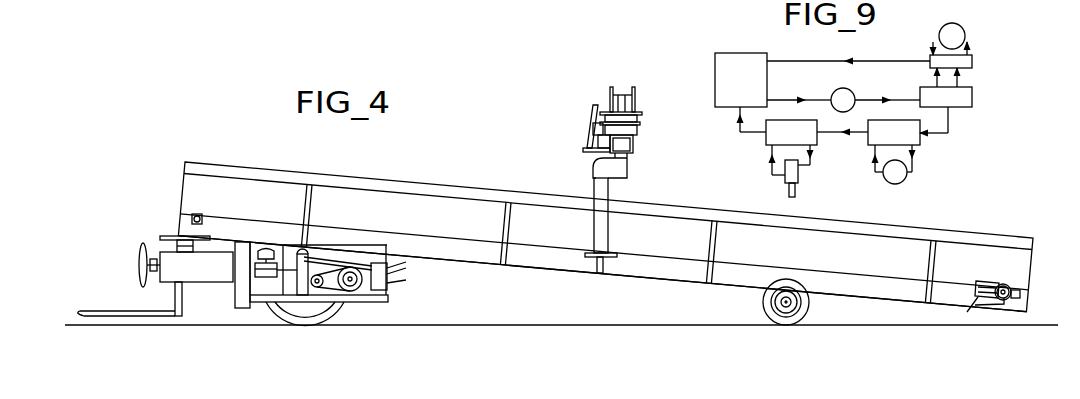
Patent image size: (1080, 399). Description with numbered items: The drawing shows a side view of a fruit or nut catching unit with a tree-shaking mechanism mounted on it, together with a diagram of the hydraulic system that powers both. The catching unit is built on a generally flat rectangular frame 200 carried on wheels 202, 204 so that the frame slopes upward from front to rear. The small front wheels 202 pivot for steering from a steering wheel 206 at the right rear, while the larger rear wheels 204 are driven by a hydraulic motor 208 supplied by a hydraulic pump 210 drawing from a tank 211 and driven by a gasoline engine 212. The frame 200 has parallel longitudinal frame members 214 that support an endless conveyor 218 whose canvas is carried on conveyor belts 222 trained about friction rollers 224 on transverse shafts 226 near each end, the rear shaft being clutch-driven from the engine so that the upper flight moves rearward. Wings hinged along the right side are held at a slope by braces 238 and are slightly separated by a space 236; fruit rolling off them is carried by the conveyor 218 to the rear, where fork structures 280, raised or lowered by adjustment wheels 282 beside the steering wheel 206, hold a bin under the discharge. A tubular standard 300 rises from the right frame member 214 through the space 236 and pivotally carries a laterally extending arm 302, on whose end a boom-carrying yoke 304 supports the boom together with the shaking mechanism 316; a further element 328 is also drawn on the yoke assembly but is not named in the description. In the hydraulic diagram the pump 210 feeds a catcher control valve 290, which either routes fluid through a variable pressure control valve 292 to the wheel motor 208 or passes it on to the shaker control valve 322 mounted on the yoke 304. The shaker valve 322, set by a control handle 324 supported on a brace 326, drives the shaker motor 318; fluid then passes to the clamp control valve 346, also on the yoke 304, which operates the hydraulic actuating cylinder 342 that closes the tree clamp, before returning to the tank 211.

In FIG. 4, the frame 200 is at (565, 262).
In FIG. 4, the front wheels 202 is at (771, 314).
In FIG. 4, the rear wheels 204 is at (317, 311).
In FIG. 4, the steering wheel 206 is at (172, 236).
In FIG. 4, the hydraulic motor 208 is at (304, 255).
In FIG. 9, the hydraulic motor 208 is at (956, 36).
In FIG. 4, the hydraulic pump 210 is at (390, 284).
In FIG. 9, the hydraulic pump 210 is at (849, 95).
In FIG. 4, the tank 211 is at (387, 300).
In FIG. 9, the tank 211 is at (737, 60).
In FIG. 4, the gasoline engine 212 is at (262, 290).
In FIG. 4, the longitudinal frame members 214 is at (683, 276).
In FIG. 4, the endless conveyor 218 is at (976, 279).
In FIG. 4, the conveyor belts 222 is at (990, 303).
In FIG. 4, the friction rollers 224 is at (1009, 289).
In FIG. 4, the transverse shafts 226 is at (201, 217).
In FIG. 4, the space between wings 236 is at (609, 172).
In FIG. 4, the braces 238 is at (313, 208).
In FIG. 4, the fork structures 280 is at (125, 312).
In FIG. 4, the adjustment wheels 282 is at (139, 253).
In FIG. 4, the catcher control valve 290 is at (378, 263).
In FIG. 9, the catcher control valve 290 is at (962, 97).
In FIG. 9, the pressure control valve 292 is at (962, 61).
In FIG. 4, the tubular standard 300 is at (601, 222).
In FIG. 4, the laterally extending arm 302 is at (596, 170).
In FIG. 4, the boom-carrying yoke 304 is at (636, 145).
In FIG. 4, the shaking mechanism 316 is at (641, 108).
In FIG. 9, the shaker motor 318 is at (902, 172).
In FIG. 4, the shaker control valve 322 is at (611, 100).
In FIG. 9, the shaker control valve 322 is at (918, 140).
In FIG. 4, the control handle 324 is at (605, 116).
In FIG. 4, the brace 326 is at (588, 151).
In FIG. 4, the flange 328 is at (643, 121).
In FIG. 9, the hydraulic actuating cylinder 342 is at (796, 172).
In FIG. 4, the clamp control valve 346 is at (596, 134).
In FIG. 9, the clamp control valve 346 is at (775, 138).